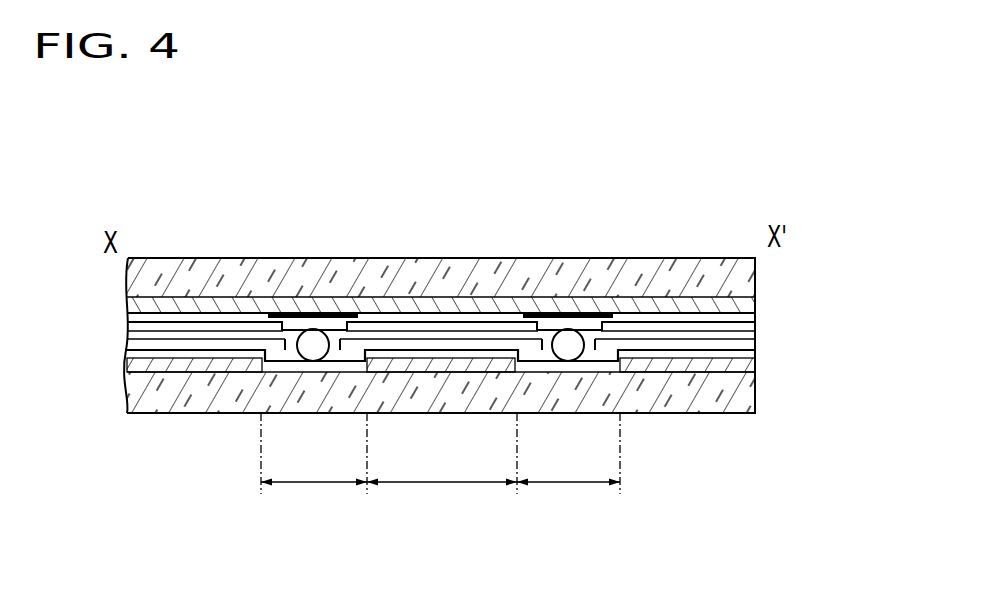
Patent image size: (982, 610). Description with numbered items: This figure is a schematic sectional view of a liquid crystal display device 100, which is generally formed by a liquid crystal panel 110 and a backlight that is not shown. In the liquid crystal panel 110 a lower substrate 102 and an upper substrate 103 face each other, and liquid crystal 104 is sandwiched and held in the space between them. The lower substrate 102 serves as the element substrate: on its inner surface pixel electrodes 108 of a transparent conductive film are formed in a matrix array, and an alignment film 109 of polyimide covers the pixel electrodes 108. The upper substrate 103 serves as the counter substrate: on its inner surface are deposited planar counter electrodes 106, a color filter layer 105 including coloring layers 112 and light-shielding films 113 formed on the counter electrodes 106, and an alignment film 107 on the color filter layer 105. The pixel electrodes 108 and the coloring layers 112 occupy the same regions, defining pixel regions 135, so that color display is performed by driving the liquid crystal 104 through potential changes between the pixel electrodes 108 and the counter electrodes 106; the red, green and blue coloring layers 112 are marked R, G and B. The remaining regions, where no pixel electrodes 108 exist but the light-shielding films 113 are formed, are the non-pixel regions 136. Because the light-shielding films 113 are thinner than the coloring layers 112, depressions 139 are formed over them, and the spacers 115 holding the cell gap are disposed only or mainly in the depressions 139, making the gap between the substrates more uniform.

The liquid crystal display device 100 is at (672, 184).
The liquid crystal panel 110 is at (712, 233).
The lower substrate 102 is at (757, 387).
The upper substrate 103 is at (757, 272).
The liquid crystal 104 is at (757, 335).
The color filter layer 105 is at (118, 317).
The counter electrodes 106 is at (126, 304).
The alignment film 107 is at (126, 339).
The pixel electrodes 108 is at (190, 365).
The alignment film 109 is at (126, 357).
The coloring layers 112 is at (172, 317).
The light-shielding films 113 is at (341, 337).
The spacers 115 is at (308, 313).
The depressions 139 is at (336, 345).
The pixel regions 135 is at (442, 502).
The non-pixel regions 136 is at (440, 469).
The red sub-pixel R is at (222, 317).
The green sub-pixel G is at (482, 306).
The blue sub-pixel B is at (681, 306).